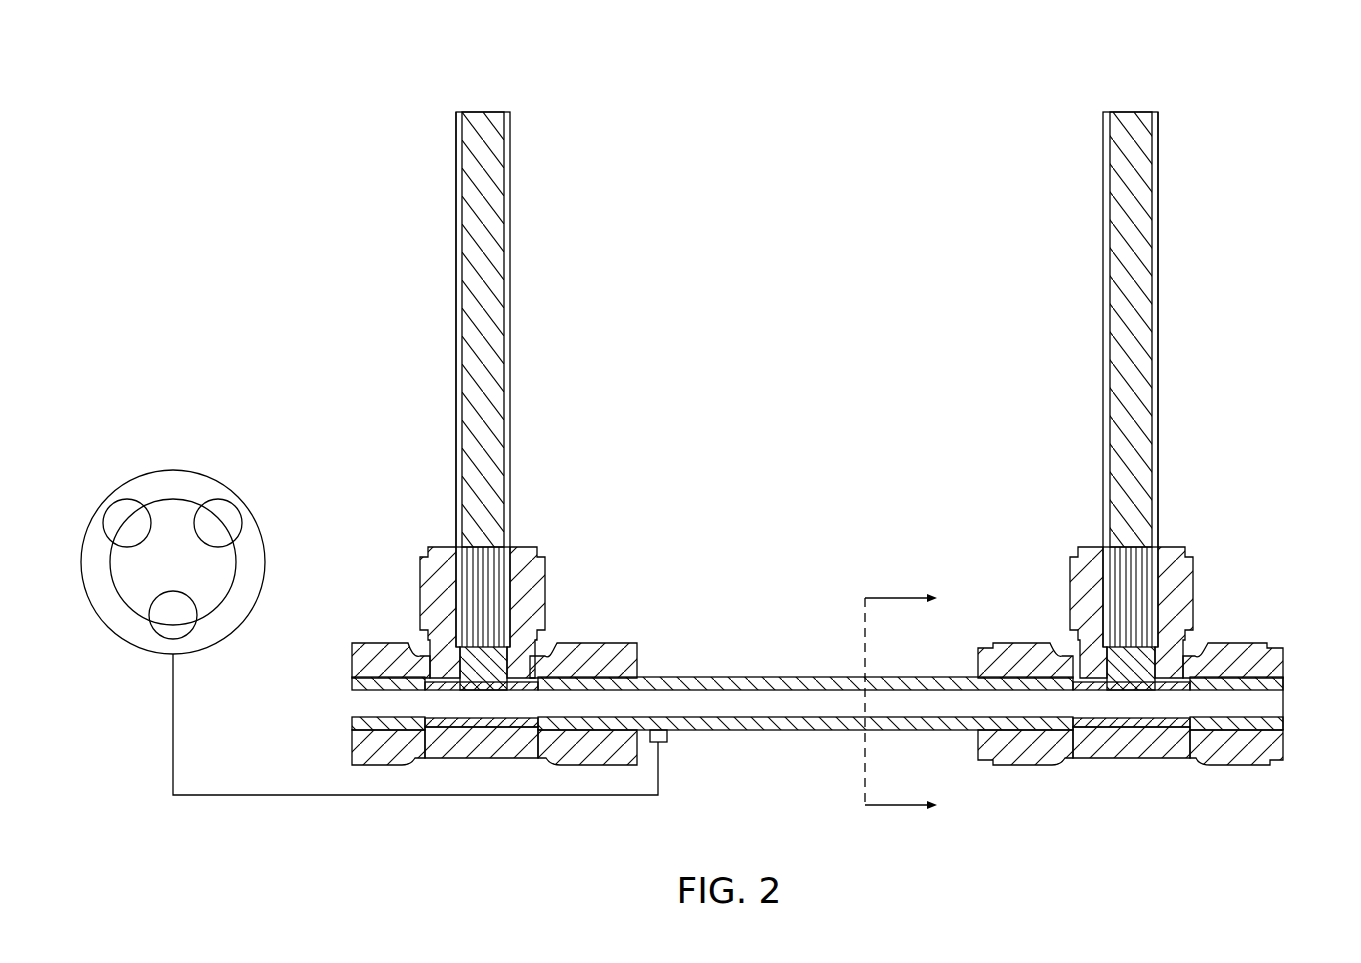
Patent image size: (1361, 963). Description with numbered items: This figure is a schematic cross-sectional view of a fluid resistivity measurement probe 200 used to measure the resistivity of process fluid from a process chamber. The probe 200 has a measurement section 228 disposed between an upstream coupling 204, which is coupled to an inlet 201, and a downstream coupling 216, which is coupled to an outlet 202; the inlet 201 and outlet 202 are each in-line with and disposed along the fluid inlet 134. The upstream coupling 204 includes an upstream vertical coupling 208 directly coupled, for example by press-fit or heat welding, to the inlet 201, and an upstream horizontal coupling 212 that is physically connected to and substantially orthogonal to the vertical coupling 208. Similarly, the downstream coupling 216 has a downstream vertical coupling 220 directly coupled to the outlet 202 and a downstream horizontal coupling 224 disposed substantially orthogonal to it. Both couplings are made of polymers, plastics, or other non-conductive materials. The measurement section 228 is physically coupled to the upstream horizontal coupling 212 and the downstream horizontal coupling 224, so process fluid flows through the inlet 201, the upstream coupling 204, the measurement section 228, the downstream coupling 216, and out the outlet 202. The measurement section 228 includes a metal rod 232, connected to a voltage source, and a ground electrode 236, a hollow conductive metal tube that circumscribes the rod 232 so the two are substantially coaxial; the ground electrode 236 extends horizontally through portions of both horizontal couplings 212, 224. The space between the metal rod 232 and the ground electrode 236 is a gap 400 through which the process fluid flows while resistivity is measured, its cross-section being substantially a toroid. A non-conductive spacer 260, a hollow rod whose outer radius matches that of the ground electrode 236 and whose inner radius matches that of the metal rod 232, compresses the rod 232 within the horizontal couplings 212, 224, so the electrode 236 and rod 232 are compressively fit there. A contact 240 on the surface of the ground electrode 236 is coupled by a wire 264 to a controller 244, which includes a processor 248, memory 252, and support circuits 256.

The fluid resistivity measurement probe 200 is at (195, 72).
The inlet 201 is at (520, 118).
The outlet 202 is at (1085, 98).
The fluid inlet 134 is at (456, 208).
The upstream coupling 204 is at (511, 634).
The upstream vertical coupling 208 is at (542, 588).
The upstream horizontal coupling 212 is at (388, 656).
The downstream coupling 216 is at (1151, 628).
The downstream vertical coupling 220 is at (1185, 588).
The downstream horizontal coupling 224 is at (1034, 657).
The measurement section 228 is at (817, 668).
The metal rod 232 is at (684, 708).
The ground electrode 236 is at (738, 732).
The contact 240 is at (658, 748).
The controller 244 is at (185, 533).
The processor 248 is at (226, 512).
The memory 252 is at (162, 625).
The support circuits 256 is at (120, 512).
The spacer 260 is at (1278, 682).
The wire 264 is at (362, 796).
The gap 400 is at (892, 728).